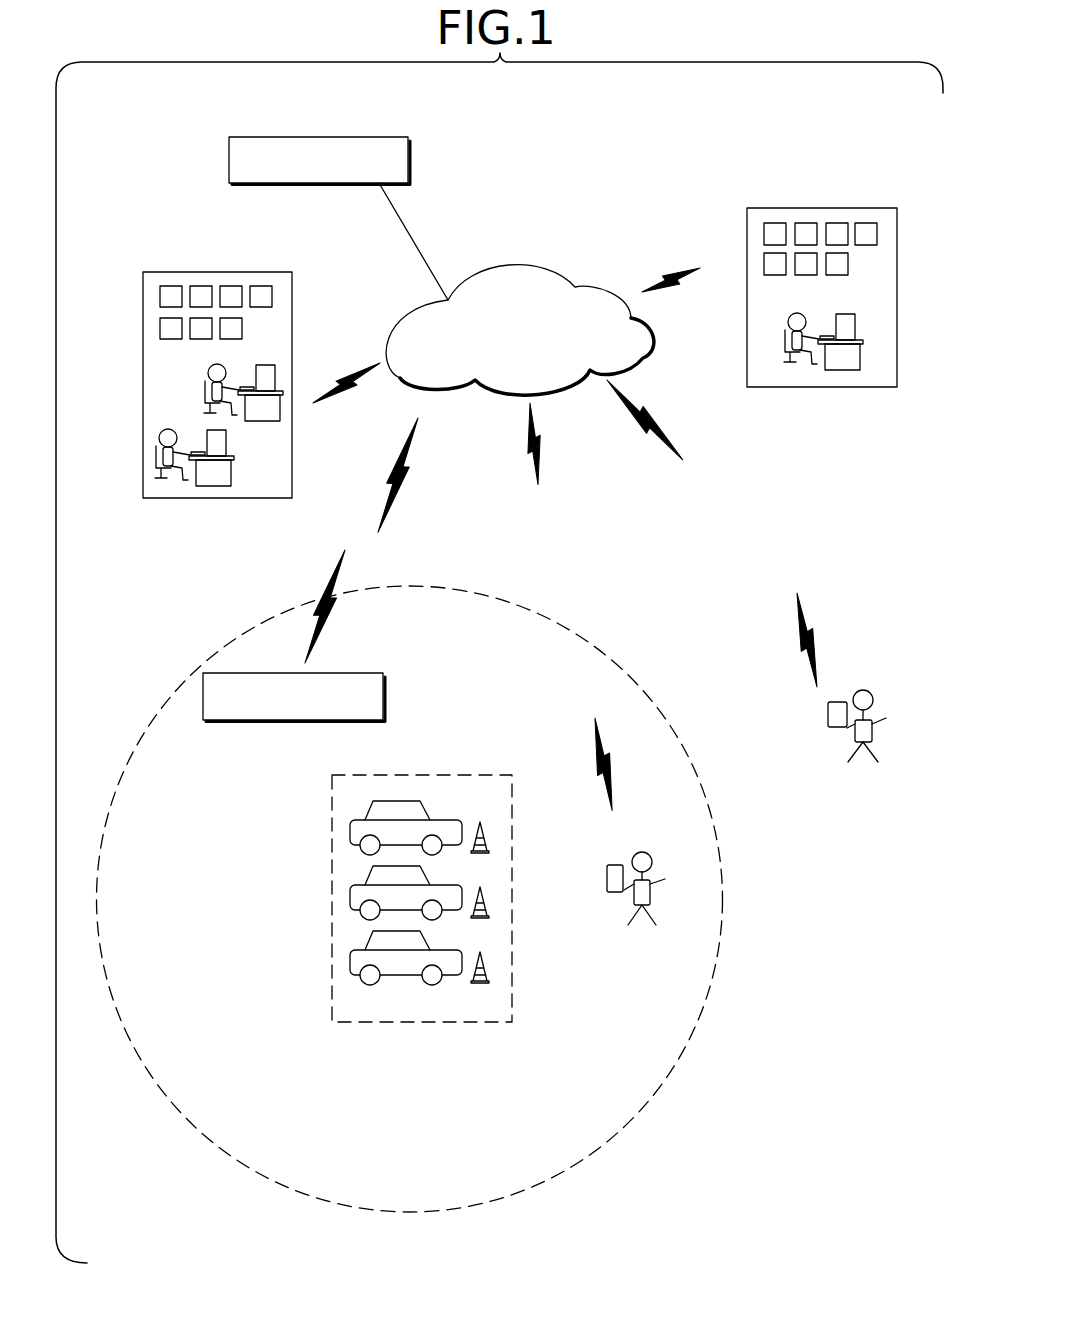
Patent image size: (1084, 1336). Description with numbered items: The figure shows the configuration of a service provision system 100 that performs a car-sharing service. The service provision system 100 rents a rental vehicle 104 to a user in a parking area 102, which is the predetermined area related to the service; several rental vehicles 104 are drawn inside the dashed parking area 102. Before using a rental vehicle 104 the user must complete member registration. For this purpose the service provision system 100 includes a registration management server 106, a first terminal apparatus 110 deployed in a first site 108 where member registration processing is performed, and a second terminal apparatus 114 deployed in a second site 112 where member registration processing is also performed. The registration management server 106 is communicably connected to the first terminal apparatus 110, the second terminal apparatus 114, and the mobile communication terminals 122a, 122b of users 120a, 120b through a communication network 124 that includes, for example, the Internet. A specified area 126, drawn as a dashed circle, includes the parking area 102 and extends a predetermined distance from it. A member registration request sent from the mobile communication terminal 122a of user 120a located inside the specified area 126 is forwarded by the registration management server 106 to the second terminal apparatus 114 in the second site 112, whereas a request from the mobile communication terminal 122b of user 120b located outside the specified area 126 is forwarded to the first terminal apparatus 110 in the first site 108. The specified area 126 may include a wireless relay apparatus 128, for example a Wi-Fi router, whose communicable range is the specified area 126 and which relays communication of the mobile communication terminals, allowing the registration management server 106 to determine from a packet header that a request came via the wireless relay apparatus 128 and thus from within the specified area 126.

The service provision system 100 is at (672, 103).
The parking area 102 is at (391, 866).
The rental vehicle 104 is at (360, 831).
The registration management server 106 is at (262, 137).
The first site 108 is at (822, 268).
The first terminal apparatus 110 is at (850, 324).
The second site 112 is at (214, 358).
The second terminal apparatus 114 is at (266, 367).
The user 120a is at (647, 855).
The user 120b is at (870, 692).
The mobile communication terminal 122a is at (613, 865).
The mobile communication terminal 122b is at (836, 702).
The communication network 124 is at (530, 267).
The specified area 126 is at (588, 641).
The wireless relay apparatus 128 is at (352, 673).